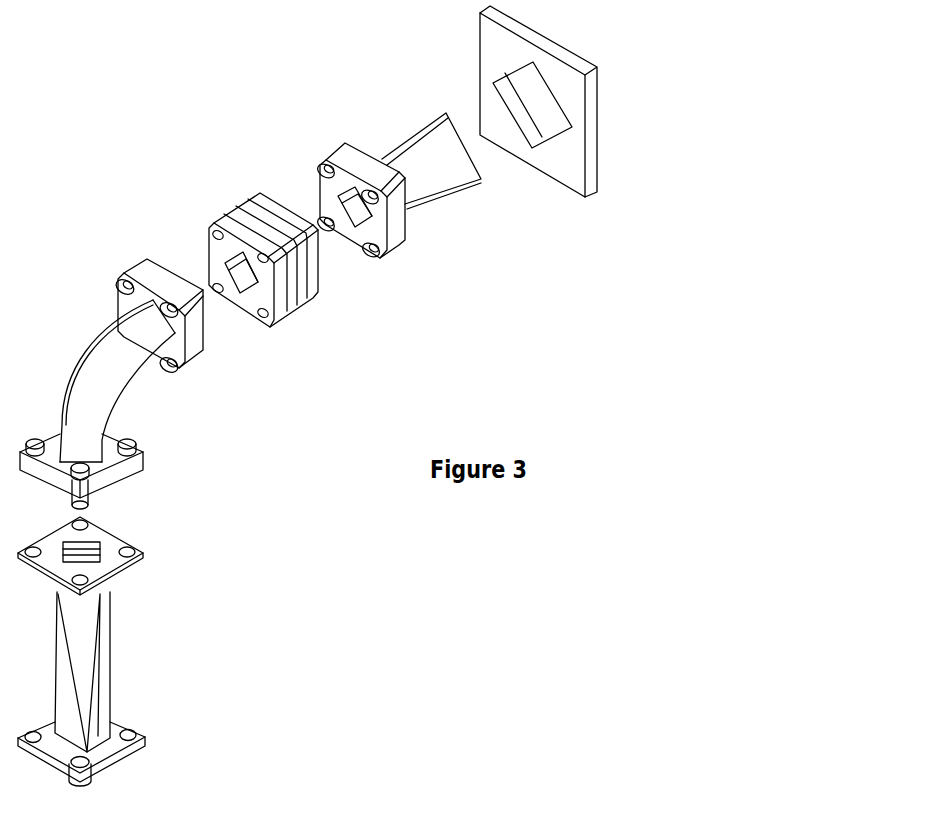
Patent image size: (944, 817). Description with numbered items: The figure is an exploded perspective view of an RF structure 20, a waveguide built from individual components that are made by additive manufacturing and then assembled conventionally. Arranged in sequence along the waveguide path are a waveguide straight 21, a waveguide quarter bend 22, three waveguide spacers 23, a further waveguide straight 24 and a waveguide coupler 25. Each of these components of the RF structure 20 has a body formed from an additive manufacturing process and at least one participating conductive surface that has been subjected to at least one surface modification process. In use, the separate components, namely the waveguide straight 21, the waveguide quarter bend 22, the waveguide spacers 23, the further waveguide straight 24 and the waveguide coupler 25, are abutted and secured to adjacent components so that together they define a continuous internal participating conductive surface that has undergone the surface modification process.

The RF structure 20 is at (165, 150).
The waveguide straight 21 is at (147, 650).
The waveguide quarter bend 22 is at (177, 428).
The waveguide spacers 23 is at (303, 332).
The further waveguide straight 24 is at (442, 230).
The waveguide coupler 25 is at (447, 65).